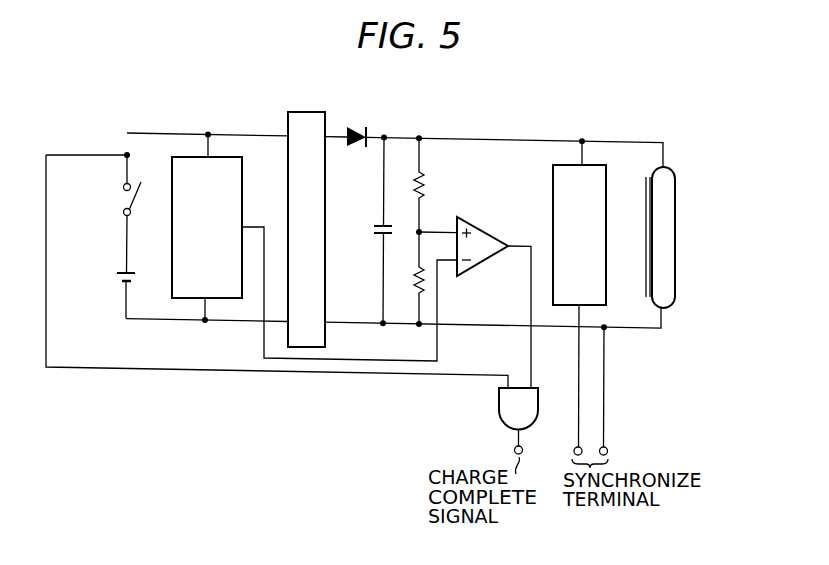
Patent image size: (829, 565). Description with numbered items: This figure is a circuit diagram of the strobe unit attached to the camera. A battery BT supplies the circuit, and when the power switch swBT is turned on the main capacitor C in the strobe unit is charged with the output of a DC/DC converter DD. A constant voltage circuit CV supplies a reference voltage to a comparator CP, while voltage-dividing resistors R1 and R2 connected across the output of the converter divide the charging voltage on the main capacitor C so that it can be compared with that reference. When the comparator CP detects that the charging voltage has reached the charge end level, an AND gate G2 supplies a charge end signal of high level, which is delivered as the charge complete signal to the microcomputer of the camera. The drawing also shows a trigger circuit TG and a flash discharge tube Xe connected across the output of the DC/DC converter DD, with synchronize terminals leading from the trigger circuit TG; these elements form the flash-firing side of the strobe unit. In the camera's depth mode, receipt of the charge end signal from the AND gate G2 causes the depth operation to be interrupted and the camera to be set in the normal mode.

The power switch swBT is at (99, 214).
The battery BT is at (108, 292).
The constant voltage circuit CV is at (245, 173).
The DC/DC converter DD is at (307, 109).
The main capacitor C is at (374, 231).
The voltage-dividing resistor R1 is at (436, 185).
The voltage-dividing resistor R2 is at (404, 278).
The comparator CP is at (483, 232).
The trigger circuit TG is at (553, 178).
The flash discharge tube Xe is at (676, 184).
The AND gate G2 is at (518, 421).